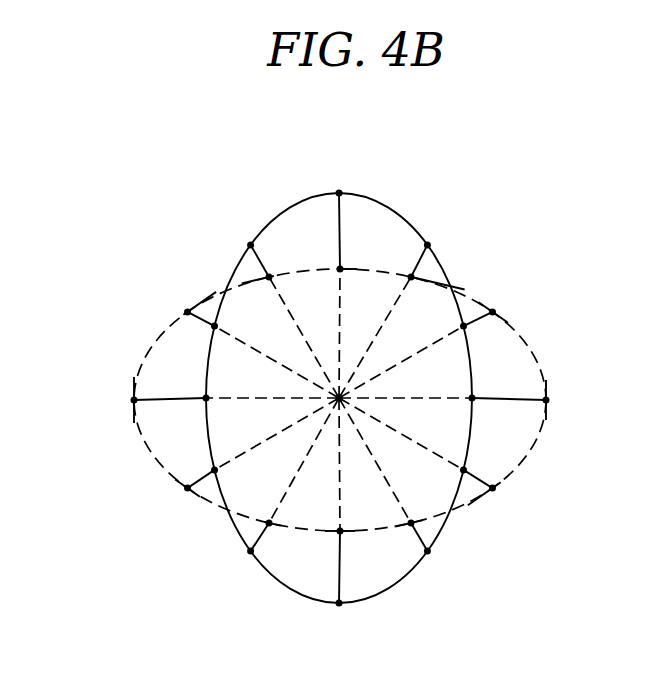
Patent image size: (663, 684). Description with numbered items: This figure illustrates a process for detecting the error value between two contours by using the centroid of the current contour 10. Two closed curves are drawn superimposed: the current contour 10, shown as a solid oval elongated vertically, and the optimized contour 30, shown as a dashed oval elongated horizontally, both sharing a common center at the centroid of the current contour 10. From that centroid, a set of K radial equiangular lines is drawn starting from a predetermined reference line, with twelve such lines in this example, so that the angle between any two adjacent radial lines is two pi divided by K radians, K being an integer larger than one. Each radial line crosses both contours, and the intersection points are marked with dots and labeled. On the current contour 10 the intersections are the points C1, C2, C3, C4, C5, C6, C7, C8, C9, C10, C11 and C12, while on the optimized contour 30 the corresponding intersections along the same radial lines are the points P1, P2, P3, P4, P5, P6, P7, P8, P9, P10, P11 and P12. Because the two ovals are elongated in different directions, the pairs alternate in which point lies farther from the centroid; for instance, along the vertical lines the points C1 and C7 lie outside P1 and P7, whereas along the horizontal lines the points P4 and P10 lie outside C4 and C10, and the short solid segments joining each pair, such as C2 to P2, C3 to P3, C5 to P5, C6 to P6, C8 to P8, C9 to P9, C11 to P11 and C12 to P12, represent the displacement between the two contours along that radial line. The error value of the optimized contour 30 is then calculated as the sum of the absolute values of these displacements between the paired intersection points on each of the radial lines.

The current contour 10 is at (371, 199).
The optimized contour 30 is at (146, 441).
The intersection point on current contour C1 is at (339, 177).
The intersection point on optimized contour P1 is at (359, 255).
The intersection point on current contour C2 is at (445, 226).
The intersection point on optimized contour P2 is at (426, 297).
The intersection point on current contour C3 is at (483, 337).
The intersection point on optimized contour P3 is at (513, 295).
The intersection point on current contour C4 is at (449, 383).
The intersection point on optimized contour P4 is at (569, 397).
The intersection point on current contour C5 is at (439, 477).
The intersection point on optimized contour P5 is at (515, 504).
The intersection point on current contour C6 is at (447, 567).
The intersection point on optimized contour P6 is at (397, 542).
The intersection point on current contour C7 is at (343, 622).
The intersection point on optimized contour P7 is at (358, 518).
The intersection point on current contour C8 is at (235, 570).
The intersection point on optimized contour P8 is at (285, 542).
The intersection point on current contour C9 is at (235, 480).
The intersection point on optimized contour P9 is at (168, 502).
The intersection point on current contour C10 is at (237, 384).
The intersection point on optimized contour P10 is at (104, 394).
The intersection point on current contour C11 is at (244, 316).
The intersection point on optimized contour P11 is at (166, 293).
The intersection point on current contour C12 is at (224, 226).
The intersection point on optimized contour P12 is at (294, 259).